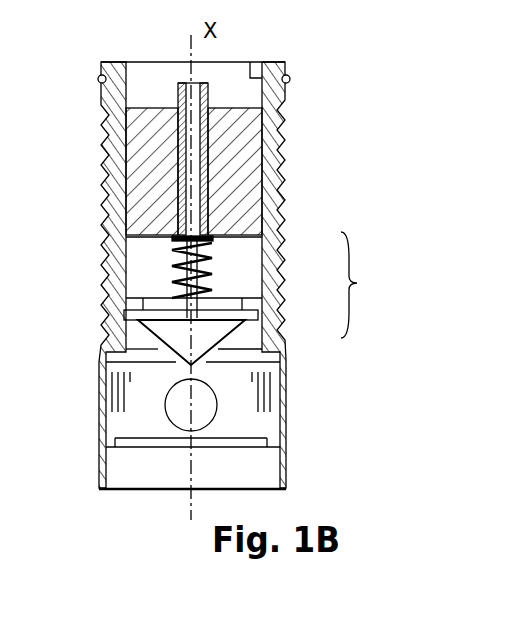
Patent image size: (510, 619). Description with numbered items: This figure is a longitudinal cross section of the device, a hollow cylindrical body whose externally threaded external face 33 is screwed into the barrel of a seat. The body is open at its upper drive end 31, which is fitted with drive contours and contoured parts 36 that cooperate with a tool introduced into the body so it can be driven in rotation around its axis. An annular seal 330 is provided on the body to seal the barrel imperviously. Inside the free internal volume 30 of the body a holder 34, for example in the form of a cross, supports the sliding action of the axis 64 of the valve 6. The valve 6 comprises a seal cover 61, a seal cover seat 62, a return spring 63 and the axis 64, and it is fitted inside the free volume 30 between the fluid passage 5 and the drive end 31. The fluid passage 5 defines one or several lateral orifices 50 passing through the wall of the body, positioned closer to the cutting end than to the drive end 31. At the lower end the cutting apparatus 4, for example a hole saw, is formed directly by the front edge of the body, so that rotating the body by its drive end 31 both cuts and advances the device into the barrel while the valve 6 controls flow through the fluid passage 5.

The cutting apparatus 4 is at (258, 488).
The fluid passage 5 is at (165, 387).
The valve 6 is at (358, 285).
The free internal volume 30 is at (150, 260).
The end 31 is at (98, 77).
The external face 33 is at (100, 213).
The holder 34 is at (222, 183).
The contoured parts 36 is at (255, 66).
The lateral orifice 50 is at (204, 406).
The seal cover 61 is at (282, 328).
The seal cover seat 62 is at (240, 300).
The return spring 63 is at (214, 264).
The axis 64 is at (213, 237).
The annular seal 330 is at (305, 76).